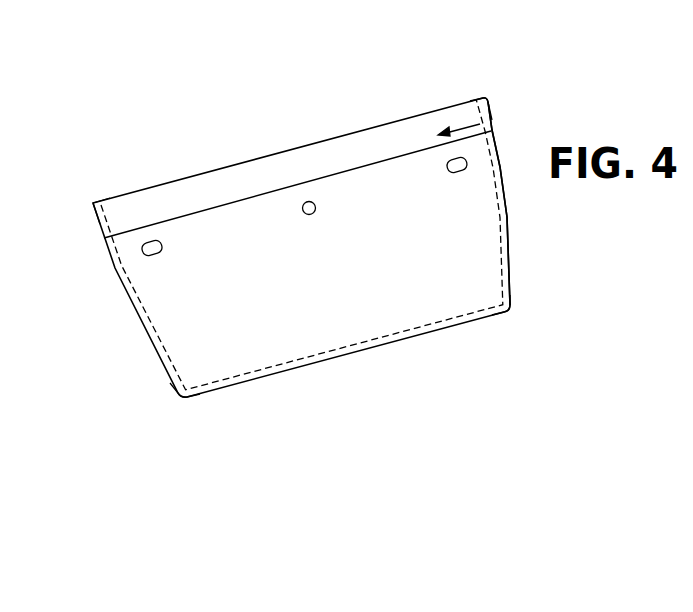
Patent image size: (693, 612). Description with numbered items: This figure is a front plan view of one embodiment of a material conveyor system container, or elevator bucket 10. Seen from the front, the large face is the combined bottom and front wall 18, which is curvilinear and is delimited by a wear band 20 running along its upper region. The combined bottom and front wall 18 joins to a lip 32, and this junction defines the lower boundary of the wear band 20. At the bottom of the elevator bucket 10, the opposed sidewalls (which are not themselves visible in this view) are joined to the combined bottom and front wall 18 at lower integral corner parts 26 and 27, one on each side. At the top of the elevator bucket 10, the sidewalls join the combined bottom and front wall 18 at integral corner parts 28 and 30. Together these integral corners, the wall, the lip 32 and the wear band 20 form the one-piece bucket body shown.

The elevator bucket 10 is at (165, 143).
The combined bottom and front wall 18 is at (339, 266).
The wear band 20 is at (491, 117).
The lower integral corner part 26 is at (182, 398).
The lower integral corner part 27 is at (510, 312).
The integral corner part 28 is at (484, 97).
The integral corner part 30 is at (93, 203).
The lip 32 is at (373, 150).